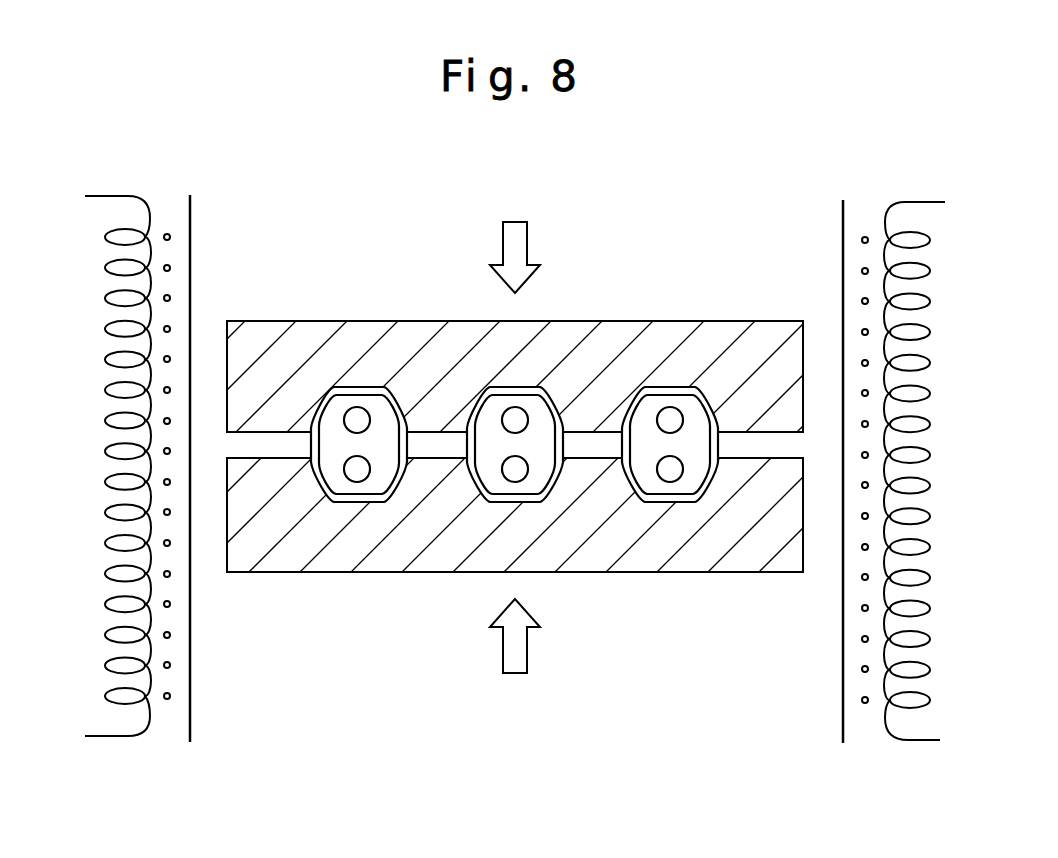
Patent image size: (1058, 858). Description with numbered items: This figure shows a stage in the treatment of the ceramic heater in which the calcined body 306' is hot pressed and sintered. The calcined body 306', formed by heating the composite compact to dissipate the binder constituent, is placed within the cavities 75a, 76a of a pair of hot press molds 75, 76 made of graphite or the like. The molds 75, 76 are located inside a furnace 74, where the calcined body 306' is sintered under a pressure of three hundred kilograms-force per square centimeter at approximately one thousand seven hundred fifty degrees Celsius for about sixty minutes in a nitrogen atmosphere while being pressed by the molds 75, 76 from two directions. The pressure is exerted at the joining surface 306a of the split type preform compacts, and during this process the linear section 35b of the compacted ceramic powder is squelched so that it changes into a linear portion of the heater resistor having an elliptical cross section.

The furnace 74 is at (843, 250).
The hot press mold 75 is at (237, 352).
The hot press mold 76 is at (235, 548).
The cavity 75a is at (383, 392).
The cavity 76a is at (347, 500).
The linear section 35b is at (348, 407).
The joining surface 306a is at (357, 447).
The calcined body 306' is at (472, 566).